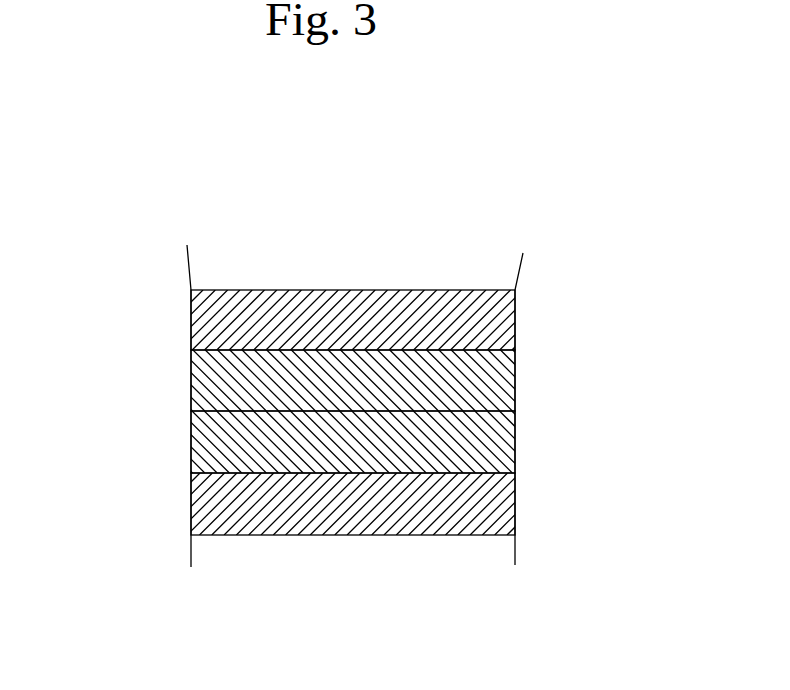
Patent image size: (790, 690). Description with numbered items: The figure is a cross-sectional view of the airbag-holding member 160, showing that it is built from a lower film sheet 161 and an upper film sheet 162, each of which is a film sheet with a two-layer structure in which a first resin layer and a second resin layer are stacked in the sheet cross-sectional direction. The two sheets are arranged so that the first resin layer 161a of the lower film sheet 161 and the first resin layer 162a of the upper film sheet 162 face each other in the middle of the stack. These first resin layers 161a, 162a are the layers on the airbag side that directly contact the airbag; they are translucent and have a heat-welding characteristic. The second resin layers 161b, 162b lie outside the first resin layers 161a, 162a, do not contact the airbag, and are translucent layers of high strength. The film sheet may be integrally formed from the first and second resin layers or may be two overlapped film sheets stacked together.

The airbag-holding member 160 is at (459, 230).
The upper film sheet 162 is at (547, 290).
The lower film sheet 161 is at (547, 420).
The second resin layer 162b is at (305, 302).
The first resin layer 162a is at (210, 370).
The first resin layer 161a is at (208, 450).
The second resin layer 161b is at (410, 520).